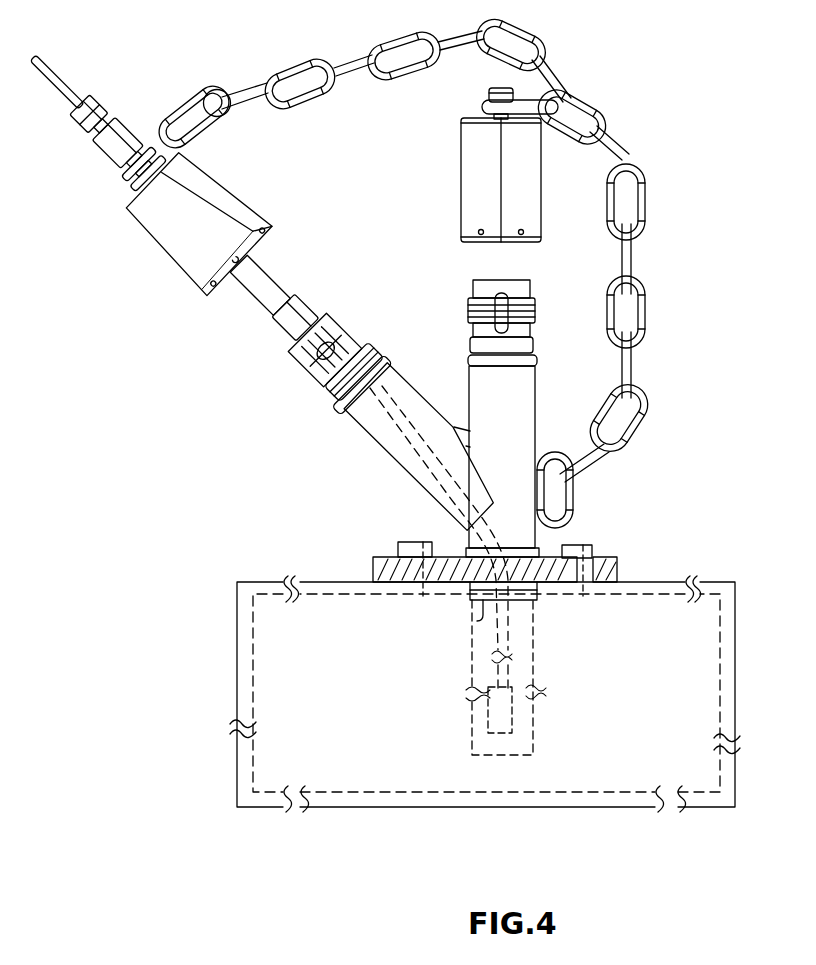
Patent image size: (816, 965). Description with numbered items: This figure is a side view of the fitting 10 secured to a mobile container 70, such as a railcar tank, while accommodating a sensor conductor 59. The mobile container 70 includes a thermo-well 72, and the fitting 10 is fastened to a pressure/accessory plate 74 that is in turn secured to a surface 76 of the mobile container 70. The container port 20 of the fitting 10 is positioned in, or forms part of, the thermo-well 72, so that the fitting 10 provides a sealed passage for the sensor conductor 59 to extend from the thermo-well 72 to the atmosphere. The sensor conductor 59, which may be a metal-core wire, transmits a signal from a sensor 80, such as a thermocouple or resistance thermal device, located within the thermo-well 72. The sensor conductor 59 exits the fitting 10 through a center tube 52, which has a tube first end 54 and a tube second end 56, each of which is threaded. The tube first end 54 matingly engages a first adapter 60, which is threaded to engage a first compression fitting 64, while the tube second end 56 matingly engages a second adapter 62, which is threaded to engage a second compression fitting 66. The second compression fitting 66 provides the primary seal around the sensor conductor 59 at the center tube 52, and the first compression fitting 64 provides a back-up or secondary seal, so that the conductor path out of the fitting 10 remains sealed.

The fitting 10 is at (695, 255).
The container port 20 is at (483, 603).
The center tube 52 is at (245, 292).
The tube first end 54 is at (150, 132).
The tube second end 56 is at (288, 282).
The sensor conductor 59 is at (57, 80).
The first adapter 60 is at (97, 148).
The second adapter 62 is at (273, 330).
The first compression fitting 64 is at (103, 118).
The second compression fitting 66 is at (343, 330).
The mobile container 70 is at (225, 645).
The thermo-well 72 is at (470, 740).
The pressure/accessory plate 74 is at (605, 556).
The surface 76 is at (322, 580).
The sensor 80 is at (502, 717).